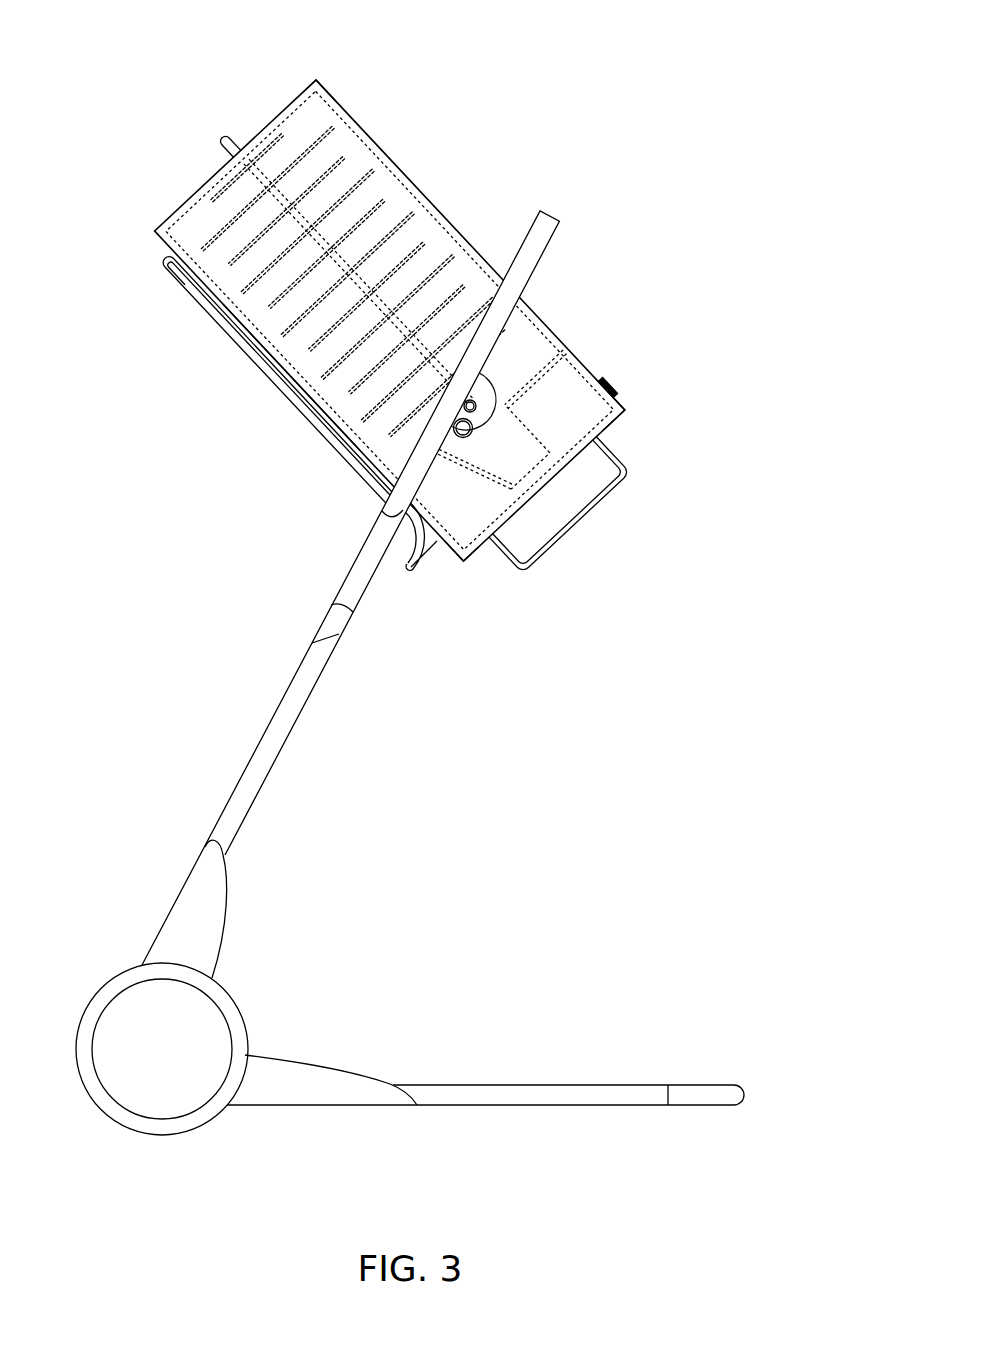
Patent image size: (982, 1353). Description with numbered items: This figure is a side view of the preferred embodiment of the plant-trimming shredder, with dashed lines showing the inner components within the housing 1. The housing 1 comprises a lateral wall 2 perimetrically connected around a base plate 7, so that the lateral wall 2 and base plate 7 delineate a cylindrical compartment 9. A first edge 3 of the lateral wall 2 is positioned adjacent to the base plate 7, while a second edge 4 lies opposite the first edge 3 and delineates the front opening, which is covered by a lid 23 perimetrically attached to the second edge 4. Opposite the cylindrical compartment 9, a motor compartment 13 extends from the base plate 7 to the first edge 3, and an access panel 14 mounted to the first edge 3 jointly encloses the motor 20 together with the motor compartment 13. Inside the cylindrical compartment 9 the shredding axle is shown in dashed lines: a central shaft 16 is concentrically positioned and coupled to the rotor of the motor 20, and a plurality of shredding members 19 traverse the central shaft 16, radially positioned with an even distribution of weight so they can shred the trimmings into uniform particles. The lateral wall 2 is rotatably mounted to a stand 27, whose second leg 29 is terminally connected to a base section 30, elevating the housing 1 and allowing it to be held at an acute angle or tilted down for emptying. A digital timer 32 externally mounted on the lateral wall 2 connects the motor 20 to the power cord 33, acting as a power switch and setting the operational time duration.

The housing 1 is at (380, 126).
The lateral wall 2 is at (447, 215).
The first edge 3 is at (465, 562).
The second edge 4 is at (316, 78).
The base plate 7 is at (447, 457).
The cylindrical compartment 9 is at (242, 292).
The motor compartment 13 is at (612, 411).
The access panel 14 is at (556, 550).
The central shaft 16 is at (292, 218).
The shredding members 19 is at (323, 337).
The motor 20 is at (510, 422).
The lid 23 is at (225, 124).
The stand 27 is at (283, 852).
The second leg 29 is at (295, 698).
The base section 30 is at (607, 1086).
The digital timer 32 is at (593, 377).
The power cord 33 is at (290, 404).